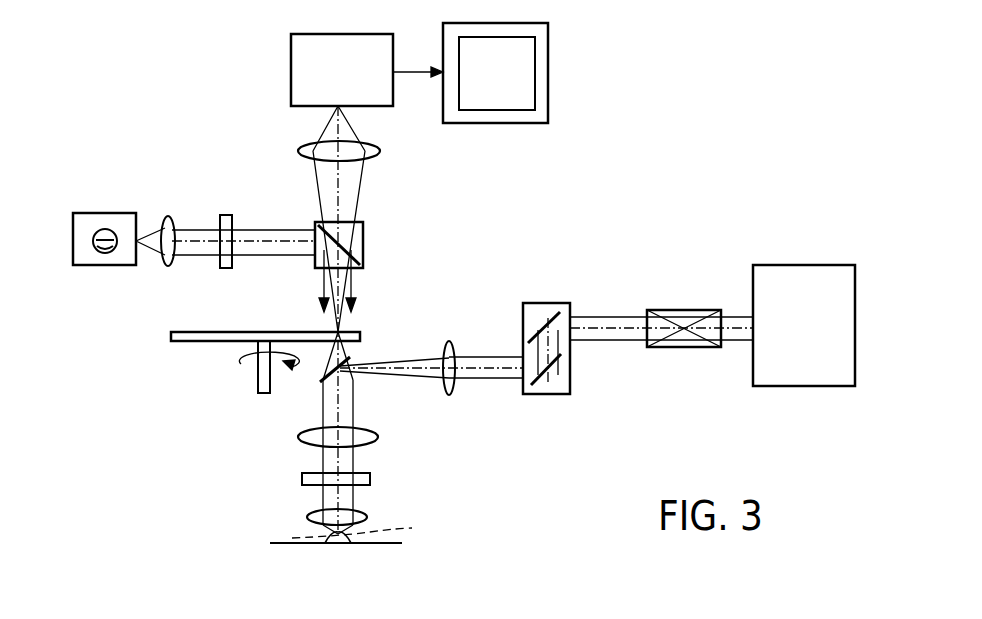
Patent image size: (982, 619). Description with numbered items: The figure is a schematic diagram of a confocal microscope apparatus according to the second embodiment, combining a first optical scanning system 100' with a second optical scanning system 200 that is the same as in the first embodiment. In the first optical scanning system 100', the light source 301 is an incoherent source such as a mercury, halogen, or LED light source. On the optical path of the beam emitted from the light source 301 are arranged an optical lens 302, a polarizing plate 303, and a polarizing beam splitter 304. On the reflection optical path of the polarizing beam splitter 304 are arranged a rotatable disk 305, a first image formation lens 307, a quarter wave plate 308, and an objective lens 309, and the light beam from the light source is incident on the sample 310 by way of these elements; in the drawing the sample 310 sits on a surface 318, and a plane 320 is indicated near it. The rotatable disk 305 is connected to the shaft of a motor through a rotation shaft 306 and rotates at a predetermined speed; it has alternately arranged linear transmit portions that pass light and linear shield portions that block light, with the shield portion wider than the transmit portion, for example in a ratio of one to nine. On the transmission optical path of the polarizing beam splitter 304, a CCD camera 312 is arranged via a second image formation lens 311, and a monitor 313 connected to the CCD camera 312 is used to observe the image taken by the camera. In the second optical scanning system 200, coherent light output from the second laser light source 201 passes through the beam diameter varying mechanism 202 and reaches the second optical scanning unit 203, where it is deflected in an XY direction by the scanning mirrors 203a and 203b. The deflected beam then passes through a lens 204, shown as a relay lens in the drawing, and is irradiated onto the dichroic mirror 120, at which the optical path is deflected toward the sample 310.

The first optical scanning system 100' is at (462, 168).
The dichroic mirror 120 is at (320, 383).
The second optical scanning system 200 is at (612, 278).
The second laser light source 201 is at (808, 265).
The beam diameter varying mechanism 202 is at (697, 310).
The second optical scanning unit 203 is at (545, 303).
The scanning mirror 203a is at (528, 330).
The scanning mirror 203b is at (570, 374).
The lens 204 is at (448, 396).
The light source 301 is at (105, 213).
The optical lens 302 is at (168, 216).
The polarizing plate 303 is at (226, 215).
The polarizing beam splitter 304 is at (363, 245).
The rotatable disk 305 is at (171, 337).
The rotation shaft 306 is at (258, 395).
The first image formation lens 307 is at (372, 433).
The quarter wave plate 308 is at (370, 477).
The objective lens 309 is at (365, 518).
The sample 310 is at (326, 541).
The second image formation lens 311 is at (380, 148).
The CCD camera 312 is at (291, 59).
The monitor 313 is at (548, 60).
The substrate surface 318 is at (372, 545).
The focal plane 320 is at (412, 530).